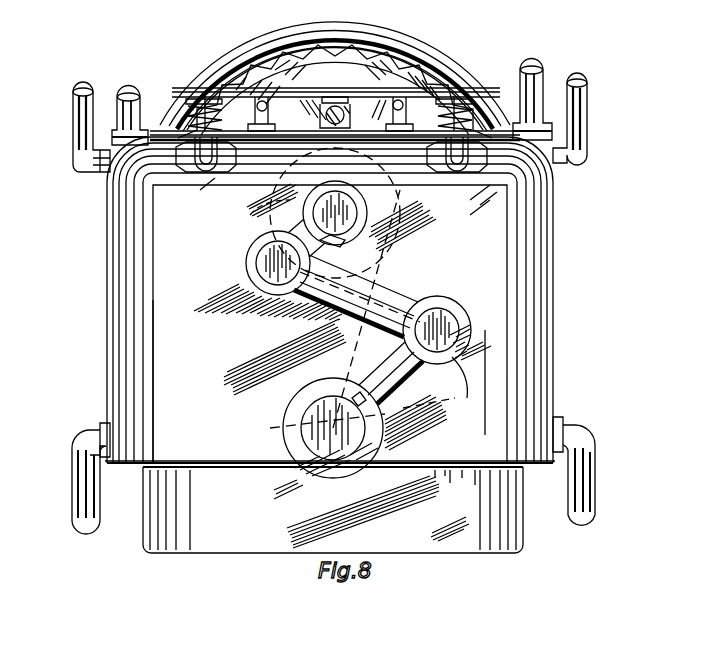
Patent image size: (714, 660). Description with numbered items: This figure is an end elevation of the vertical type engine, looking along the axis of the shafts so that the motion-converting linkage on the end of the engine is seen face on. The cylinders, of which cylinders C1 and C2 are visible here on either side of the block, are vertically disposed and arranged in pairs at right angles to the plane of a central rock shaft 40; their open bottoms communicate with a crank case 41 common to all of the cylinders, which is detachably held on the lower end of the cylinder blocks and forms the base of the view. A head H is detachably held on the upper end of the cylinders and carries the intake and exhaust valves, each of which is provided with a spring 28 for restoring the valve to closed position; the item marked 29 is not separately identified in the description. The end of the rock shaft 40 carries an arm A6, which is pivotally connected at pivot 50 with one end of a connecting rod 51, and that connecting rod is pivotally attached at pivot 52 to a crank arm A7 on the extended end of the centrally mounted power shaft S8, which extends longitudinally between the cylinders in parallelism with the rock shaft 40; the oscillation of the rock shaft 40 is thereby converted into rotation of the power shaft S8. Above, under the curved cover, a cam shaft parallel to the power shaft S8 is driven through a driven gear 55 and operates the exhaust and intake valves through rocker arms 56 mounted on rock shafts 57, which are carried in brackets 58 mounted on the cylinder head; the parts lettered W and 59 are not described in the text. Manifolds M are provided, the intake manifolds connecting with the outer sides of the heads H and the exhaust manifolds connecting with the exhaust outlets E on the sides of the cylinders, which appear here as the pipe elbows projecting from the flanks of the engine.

The driven gear 55 is at (340, 58).
The ring W is at (396, 60).
The rock shaft 57 is at (335, 91).
The rocker arm 56 is at (341, 73).
The bracket 58 is at (413, 115).
The power shaft S8 is at (357, 211).
The center pinion 59 is at (341, 112).
The spring 28 is at (196, 133).
The spring cap 29 is at (206, 118).
The exhaust outlet E is at (334, 154).
The manifold M is at (83, 97).
The head H is at (360, 155).
The pivot 52 is at (275, 262).
The connecting rod 51 is at (388, 290).
The pivot 50 is at (445, 328).
The arm A6 is at (412, 392).
The rock shaft 40 is at (278, 428).
The crank arm A7 is at (290, 212).
The cylinder C1 is at (200, 262).
The cylinder C2 is at (480, 245).
The crank case 41 is at (370, 510).